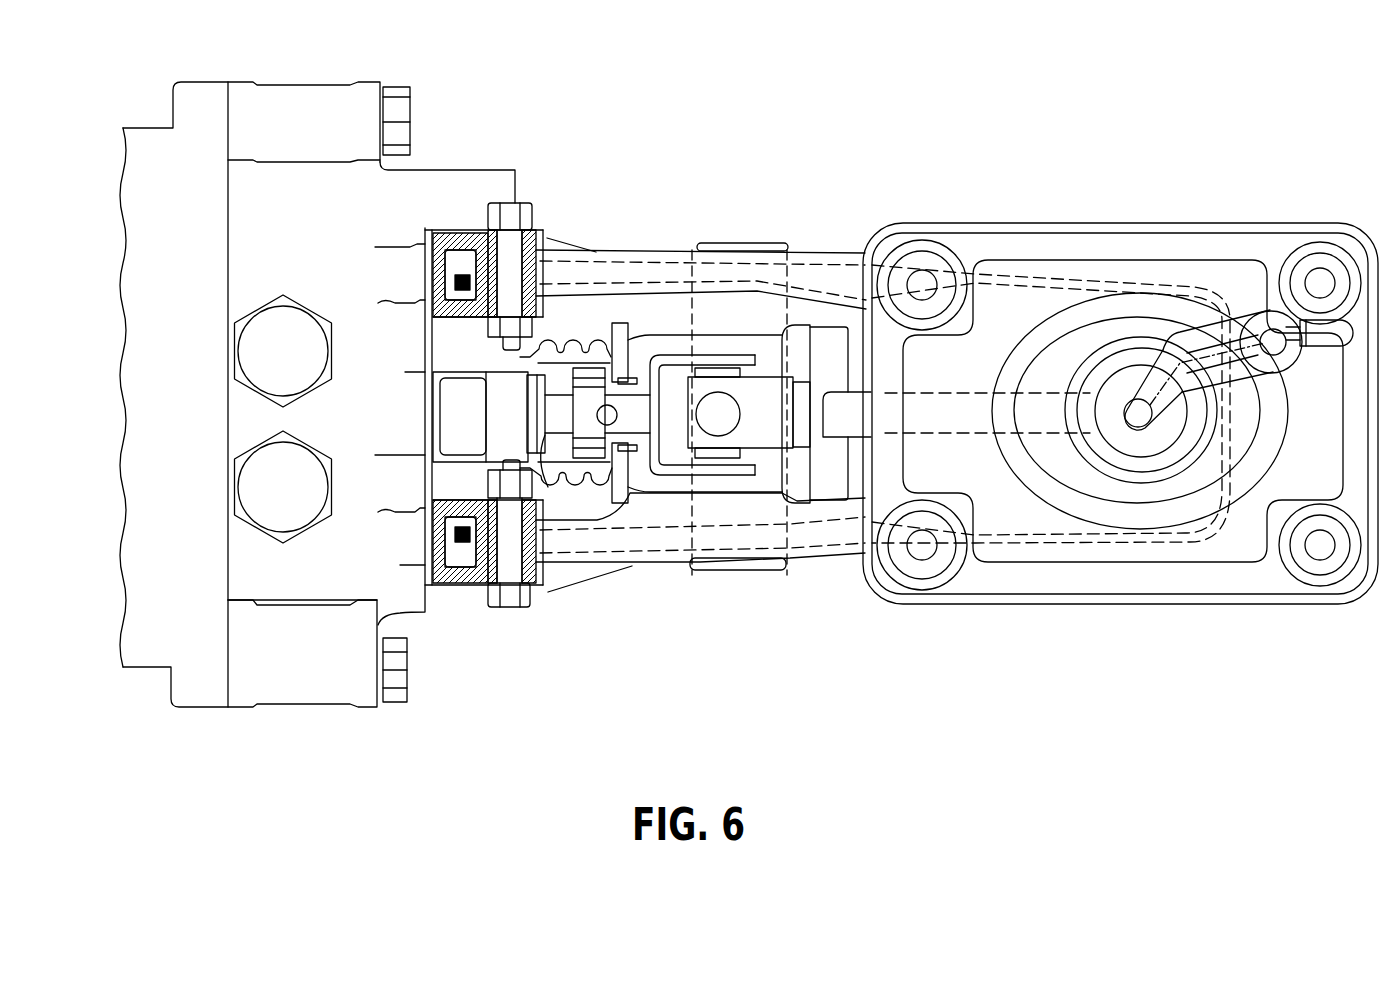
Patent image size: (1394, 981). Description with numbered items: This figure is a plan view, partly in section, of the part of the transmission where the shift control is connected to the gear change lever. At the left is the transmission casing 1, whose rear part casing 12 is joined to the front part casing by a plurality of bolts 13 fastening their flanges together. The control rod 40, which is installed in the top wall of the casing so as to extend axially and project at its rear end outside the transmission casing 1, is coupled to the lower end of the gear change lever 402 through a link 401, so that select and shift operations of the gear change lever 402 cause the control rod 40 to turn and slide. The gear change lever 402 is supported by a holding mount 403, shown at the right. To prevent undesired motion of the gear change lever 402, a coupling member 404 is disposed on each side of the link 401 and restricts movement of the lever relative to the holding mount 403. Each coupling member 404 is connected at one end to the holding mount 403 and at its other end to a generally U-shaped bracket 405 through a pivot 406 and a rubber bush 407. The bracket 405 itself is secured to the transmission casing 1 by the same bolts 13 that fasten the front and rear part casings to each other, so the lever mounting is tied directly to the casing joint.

The transmission casing 1 is at (506, 146).
The rear part casing 12 is at (632, 566).
The bolts 13 is at (448, 315).
The control rod 40 is at (550, 513).
The link 401 is at (837, 413).
The gear change lever 402 is at (1240, 320).
The holding mount 403 is at (1117, 604).
The coupling member 404 is at (660, 250).
The U-shaped bracket 405 is at (548, 247).
The pivot 406 is at (522, 205).
The rubber bush 407 is at (473, 233).